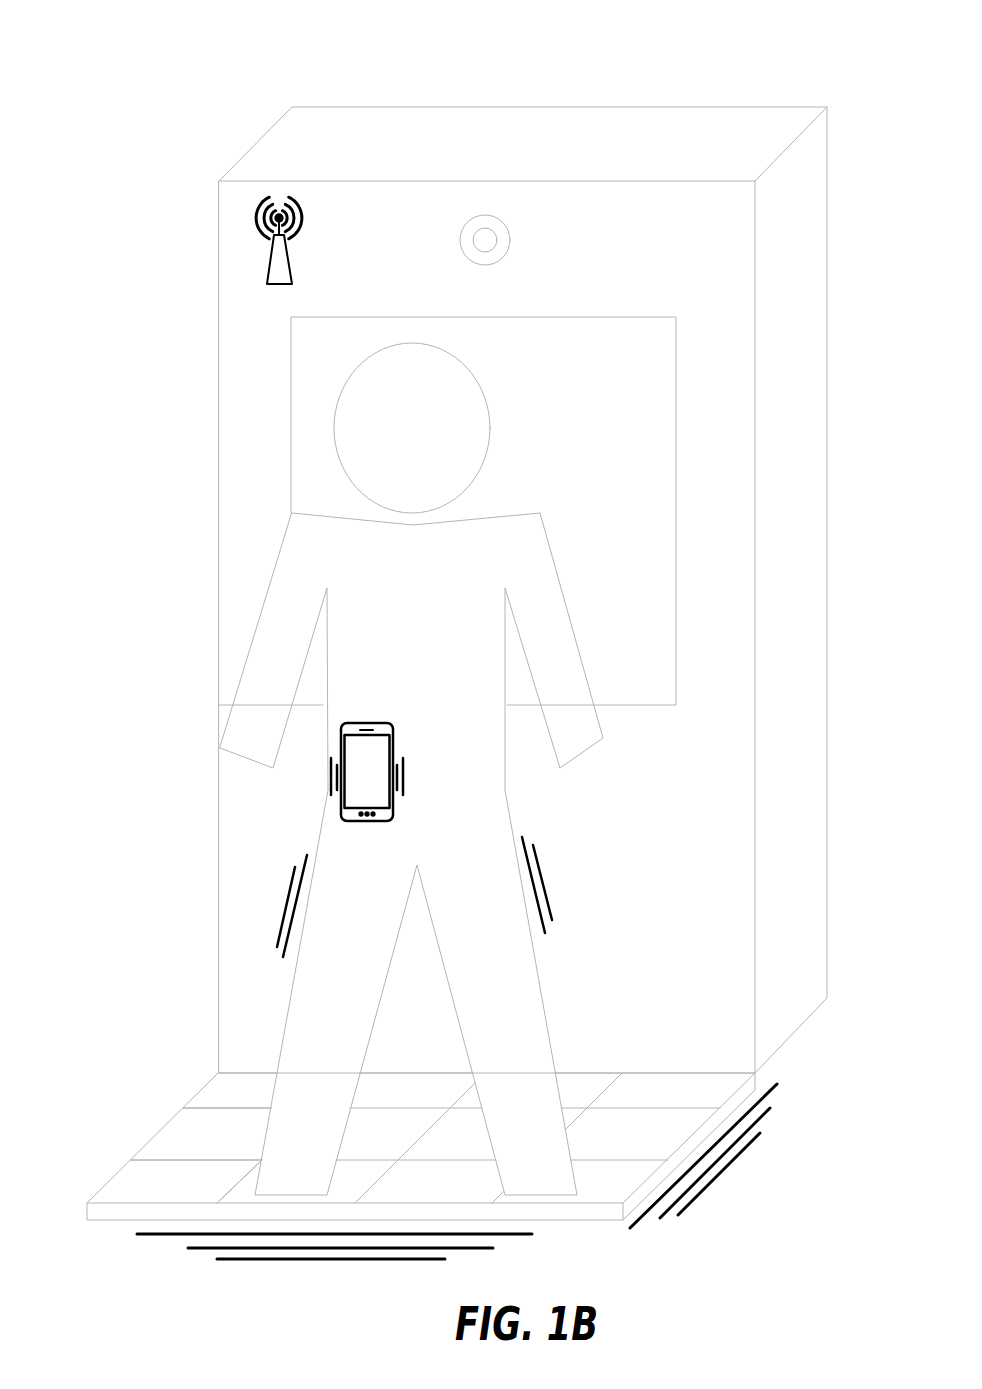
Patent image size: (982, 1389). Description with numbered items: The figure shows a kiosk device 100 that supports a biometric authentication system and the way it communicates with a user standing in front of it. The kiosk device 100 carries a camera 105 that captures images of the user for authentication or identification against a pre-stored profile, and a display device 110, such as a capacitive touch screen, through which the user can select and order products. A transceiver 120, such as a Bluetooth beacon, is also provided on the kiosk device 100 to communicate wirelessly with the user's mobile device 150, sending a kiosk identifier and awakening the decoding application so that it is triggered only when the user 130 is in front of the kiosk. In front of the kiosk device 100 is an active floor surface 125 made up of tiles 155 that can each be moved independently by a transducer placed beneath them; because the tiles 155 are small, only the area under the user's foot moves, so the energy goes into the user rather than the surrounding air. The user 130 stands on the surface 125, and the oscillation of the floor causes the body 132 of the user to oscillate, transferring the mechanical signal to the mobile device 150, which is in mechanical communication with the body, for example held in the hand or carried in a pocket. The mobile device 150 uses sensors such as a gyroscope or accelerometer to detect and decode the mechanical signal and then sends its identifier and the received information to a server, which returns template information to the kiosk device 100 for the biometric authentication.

The kiosk device 100 is at (350, 80).
The camera 105 is at (488, 240).
The display device 110 is at (582, 352).
The transceiver 120 is at (277, 258).
The surface 125 is at (173, 1115).
The user 130 is at (260, 615).
The body 132 is at (267, 1107).
The mobile device 150 is at (367, 723).
The tiles 155 is at (173, 1192).